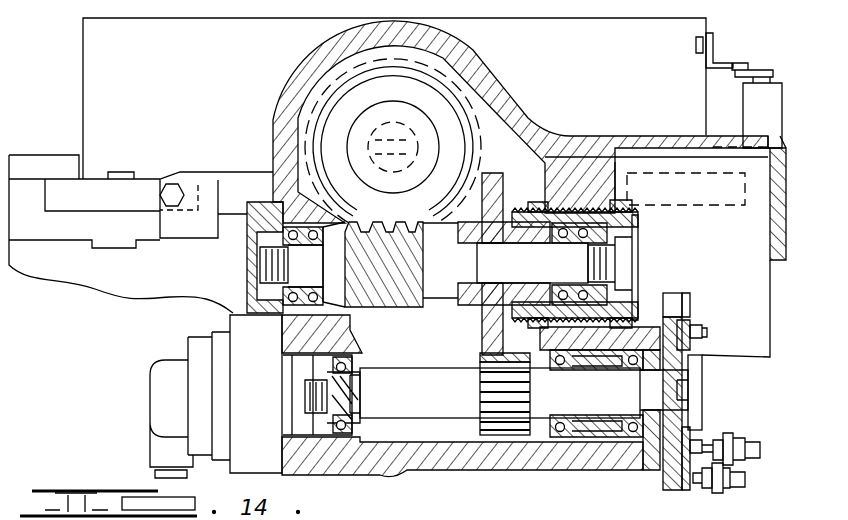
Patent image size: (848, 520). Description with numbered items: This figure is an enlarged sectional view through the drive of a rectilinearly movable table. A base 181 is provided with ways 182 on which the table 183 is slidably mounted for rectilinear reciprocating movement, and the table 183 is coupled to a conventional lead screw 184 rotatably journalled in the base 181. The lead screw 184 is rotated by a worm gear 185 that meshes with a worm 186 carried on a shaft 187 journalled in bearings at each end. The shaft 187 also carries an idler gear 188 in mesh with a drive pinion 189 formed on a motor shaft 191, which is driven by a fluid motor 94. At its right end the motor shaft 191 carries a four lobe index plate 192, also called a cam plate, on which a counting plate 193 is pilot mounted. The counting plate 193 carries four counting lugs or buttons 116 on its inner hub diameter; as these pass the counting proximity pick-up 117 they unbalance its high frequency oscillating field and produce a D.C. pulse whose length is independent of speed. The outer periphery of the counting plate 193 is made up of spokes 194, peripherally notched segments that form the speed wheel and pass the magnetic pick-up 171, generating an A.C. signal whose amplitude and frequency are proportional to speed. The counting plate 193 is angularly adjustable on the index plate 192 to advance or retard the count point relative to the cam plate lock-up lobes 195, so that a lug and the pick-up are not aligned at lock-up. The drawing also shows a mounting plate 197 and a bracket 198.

The fluid motor 94 is at (165, 399).
The counting lugs or buttons 116 is at (700, 321).
The counting proximity pick-up 117 is at (740, 431).
The magnetic pick-up 171 is at (735, 493).
The base 181 is at (102, 280).
The ways 182 is at (56, 188).
The table 183 is at (602, 49).
The lead screw 184 is at (418, 103).
The worm gear 185 is at (460, 130).
The worm 186 is at (377, 298).
The shaft 187 is at (445, 295).
The idler gear 188 is at (497, 186).
The drive pinion 189 is at (505, 435).
The motor shaft 191 is at (433, 399).
The index plate 192 is at (668, 478).
The counting plate 193 is at (688, 340).
The spokes 194 is at (722, 290).
The cam plate lock-up lobes 195 is at (673, 290).
The mounting plate 197 is at (640, 437).
The bracket 198 is at (765, 38).